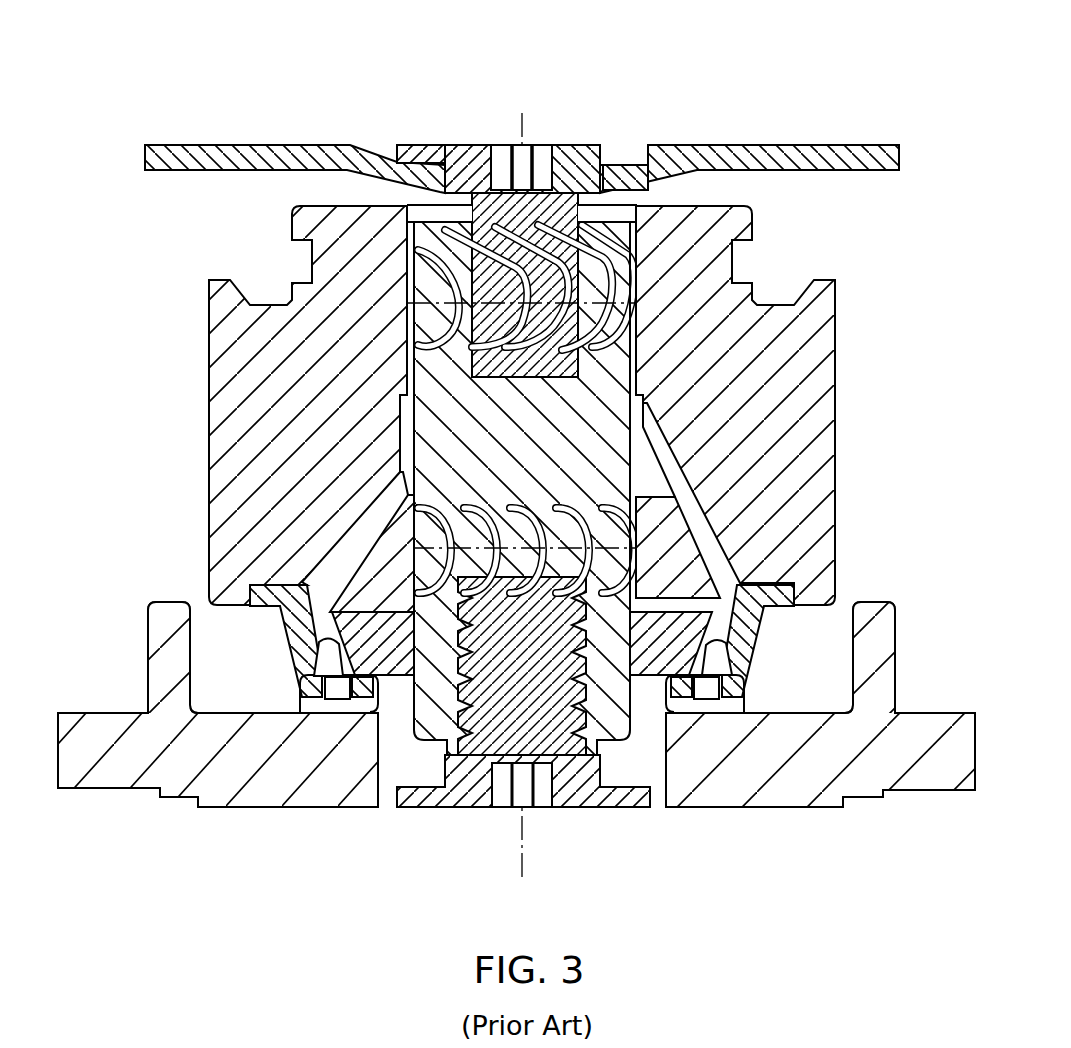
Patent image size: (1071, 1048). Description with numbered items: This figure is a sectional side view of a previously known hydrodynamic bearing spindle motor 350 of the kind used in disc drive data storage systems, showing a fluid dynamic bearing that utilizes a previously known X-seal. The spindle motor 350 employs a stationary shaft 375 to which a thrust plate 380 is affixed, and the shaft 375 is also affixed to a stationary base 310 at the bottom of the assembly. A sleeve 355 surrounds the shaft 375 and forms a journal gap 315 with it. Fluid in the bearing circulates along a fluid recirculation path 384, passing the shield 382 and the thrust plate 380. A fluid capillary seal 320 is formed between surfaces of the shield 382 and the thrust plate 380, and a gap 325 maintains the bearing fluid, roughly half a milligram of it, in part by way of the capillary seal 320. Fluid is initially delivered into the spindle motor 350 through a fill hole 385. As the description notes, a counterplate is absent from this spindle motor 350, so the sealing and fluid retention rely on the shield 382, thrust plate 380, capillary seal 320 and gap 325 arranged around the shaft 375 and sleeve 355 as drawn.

The spindle motor 350 is at (318, 105).
The stationary base 310 is at (775, 783).
The journal gap 315 is at (400, 452).
The fluid capillary seal 320 is at (327, 640).
The gap 325 is at (722, 640).
The sleeve 355 is at (785, 370).
The stationary shaft 375 is at (583, 443).
The thrust plate 380 is at (387, 645).
The shield 382 is at (302, 654).
The fluid recirculation path 384 is at (362, 512).
The fill hole 385 is at (340, 688).